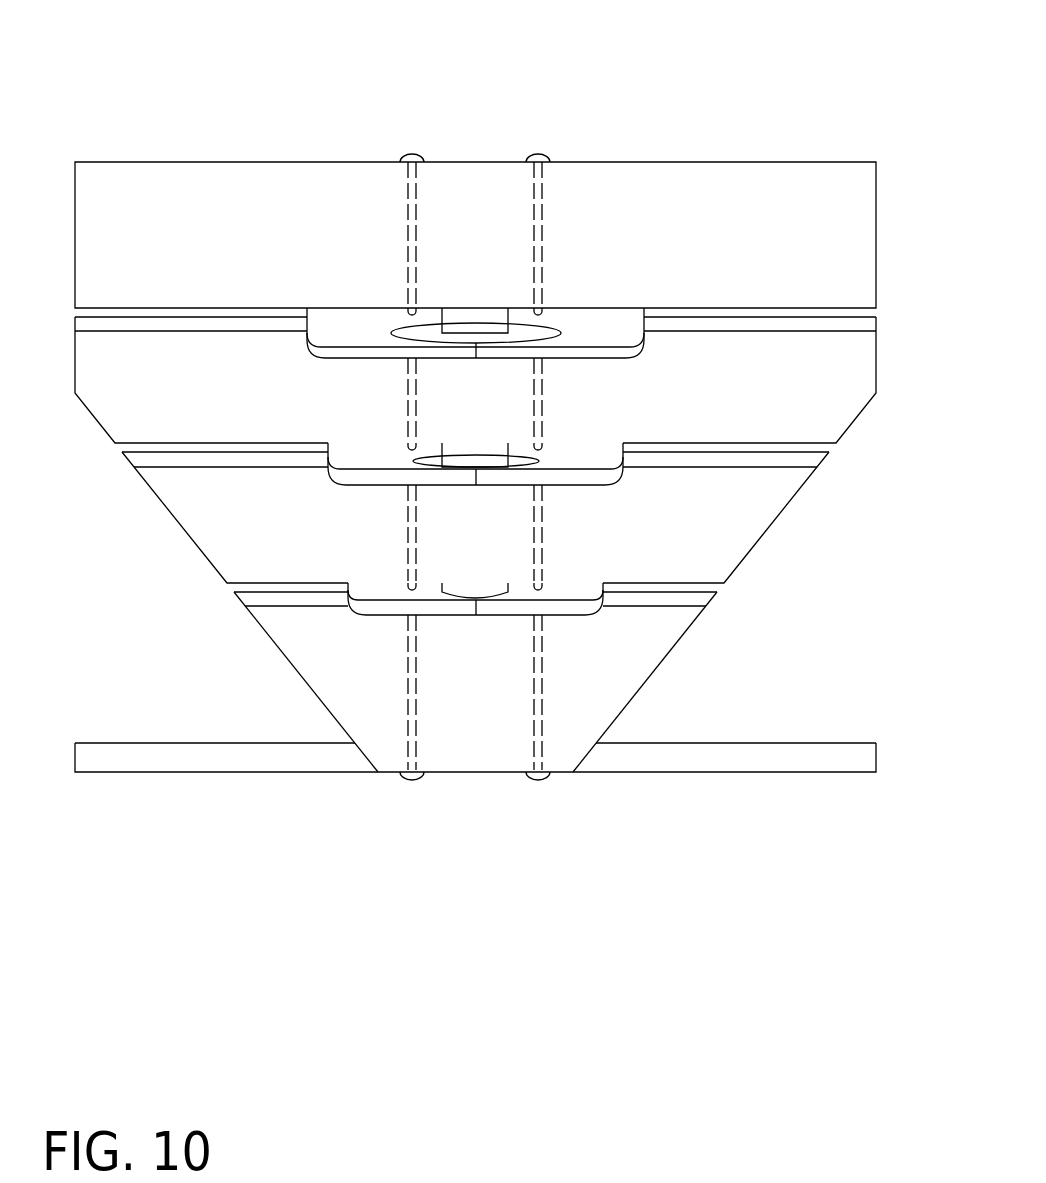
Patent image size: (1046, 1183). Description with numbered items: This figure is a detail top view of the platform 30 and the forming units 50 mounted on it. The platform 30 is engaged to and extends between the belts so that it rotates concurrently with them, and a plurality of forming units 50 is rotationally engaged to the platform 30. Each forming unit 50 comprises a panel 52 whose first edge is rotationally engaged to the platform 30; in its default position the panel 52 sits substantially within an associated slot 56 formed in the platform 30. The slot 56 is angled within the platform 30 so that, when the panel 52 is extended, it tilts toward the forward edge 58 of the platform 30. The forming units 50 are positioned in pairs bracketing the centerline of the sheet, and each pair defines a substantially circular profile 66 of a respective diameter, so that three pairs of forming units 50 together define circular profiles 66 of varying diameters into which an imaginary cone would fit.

The platform 30 is at (773, 232).
The forming unit 50 is at (470, 461).
The panel 52 is at (348, 483).
The slot 56 is at (842, 323).
The forward edge 58 is at (467, 773).
The substantially circular profile 66 is at (481, 332).